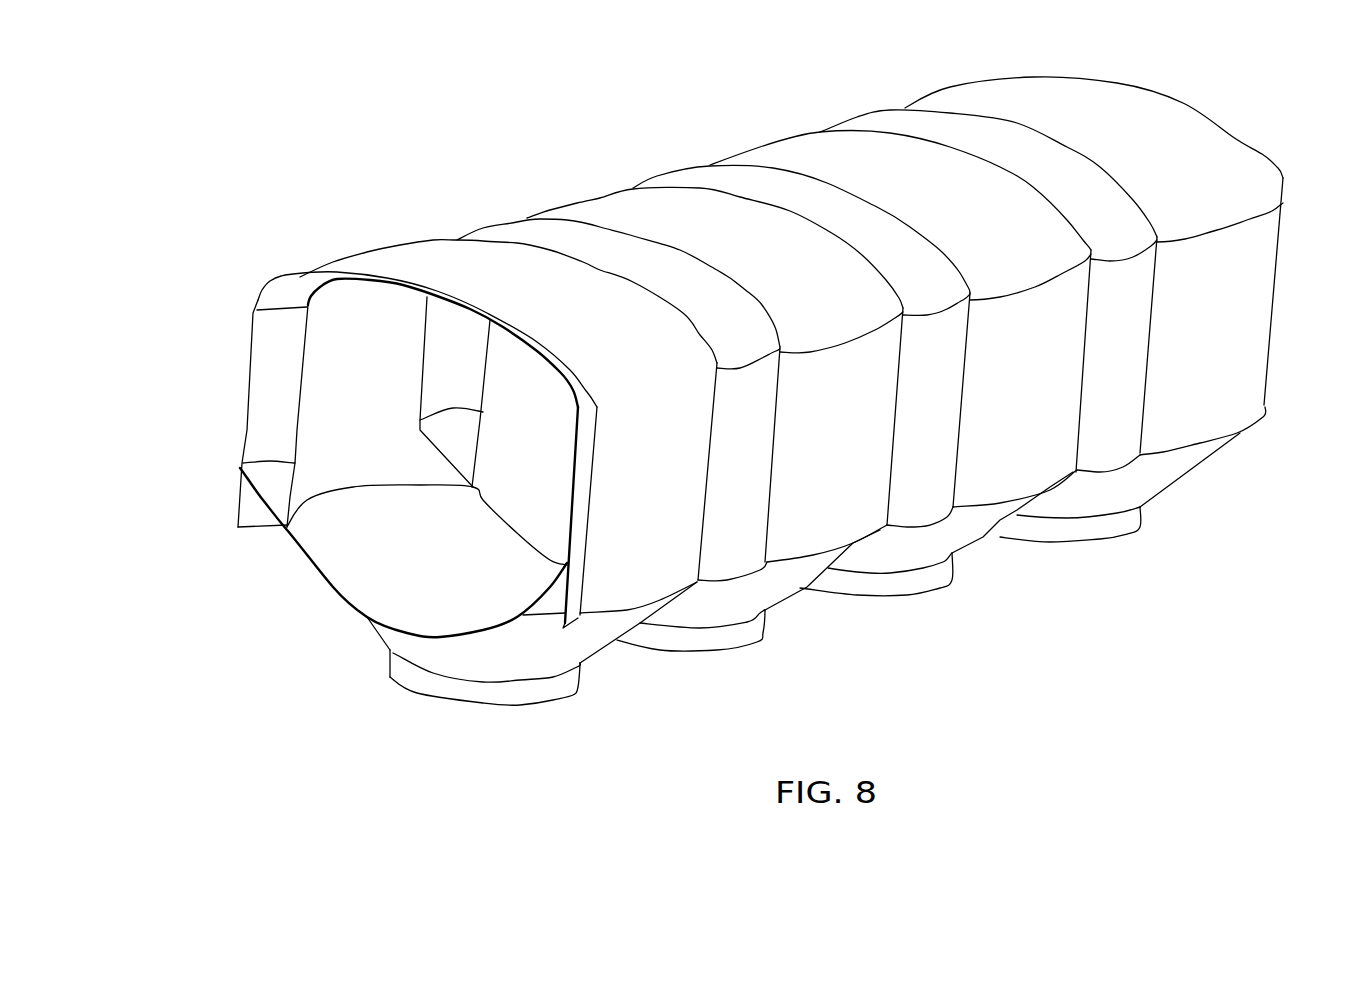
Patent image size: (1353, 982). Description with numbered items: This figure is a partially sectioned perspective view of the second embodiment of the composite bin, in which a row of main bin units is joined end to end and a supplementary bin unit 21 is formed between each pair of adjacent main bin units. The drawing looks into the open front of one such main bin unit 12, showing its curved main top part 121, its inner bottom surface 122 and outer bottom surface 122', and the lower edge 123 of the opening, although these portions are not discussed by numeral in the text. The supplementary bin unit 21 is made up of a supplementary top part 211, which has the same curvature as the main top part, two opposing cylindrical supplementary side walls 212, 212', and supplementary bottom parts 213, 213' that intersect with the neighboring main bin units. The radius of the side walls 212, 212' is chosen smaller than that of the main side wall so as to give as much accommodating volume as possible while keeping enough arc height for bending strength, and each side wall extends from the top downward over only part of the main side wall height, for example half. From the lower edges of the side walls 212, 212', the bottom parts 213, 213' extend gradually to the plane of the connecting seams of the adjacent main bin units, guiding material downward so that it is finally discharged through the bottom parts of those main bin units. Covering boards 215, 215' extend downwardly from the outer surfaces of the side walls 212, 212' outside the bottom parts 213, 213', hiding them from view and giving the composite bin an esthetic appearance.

The tubular body 12 is at (427, 222).
The top wall of body segment 121 is at (412, 256).
The inner bottom surface 122 is at (427, 521).
The outer bottom surface 122' is at (663, 631).
The bottom edge 123 is at (355, 583).
The supplementary bin unit 21 is at (283, 255).
The supplementary top part 211 is at (312, 270).
The cylindrical supplementary side wall 212 is at (248, 413).
The cylindrical supplementary side wall 212' is at (612, 515).
The supplementary bottom part 213 is at (231, 467).
The supplementary bottom part 213' is at (535, 636).
The covering board 215 is at (223, 523).
The covering board 215' is at (580, 637).